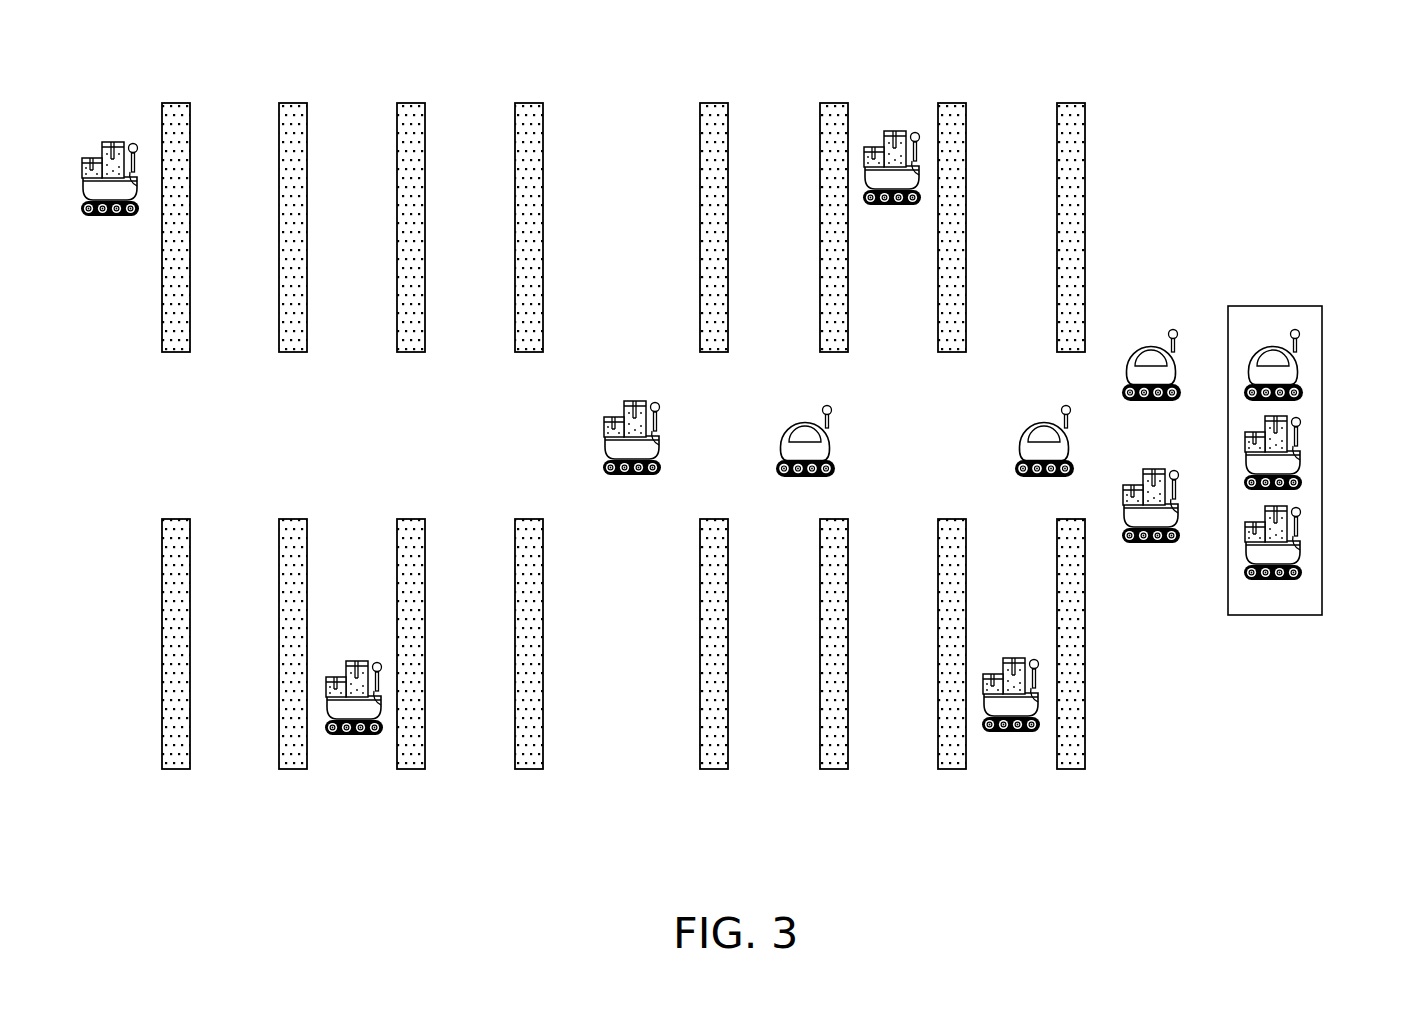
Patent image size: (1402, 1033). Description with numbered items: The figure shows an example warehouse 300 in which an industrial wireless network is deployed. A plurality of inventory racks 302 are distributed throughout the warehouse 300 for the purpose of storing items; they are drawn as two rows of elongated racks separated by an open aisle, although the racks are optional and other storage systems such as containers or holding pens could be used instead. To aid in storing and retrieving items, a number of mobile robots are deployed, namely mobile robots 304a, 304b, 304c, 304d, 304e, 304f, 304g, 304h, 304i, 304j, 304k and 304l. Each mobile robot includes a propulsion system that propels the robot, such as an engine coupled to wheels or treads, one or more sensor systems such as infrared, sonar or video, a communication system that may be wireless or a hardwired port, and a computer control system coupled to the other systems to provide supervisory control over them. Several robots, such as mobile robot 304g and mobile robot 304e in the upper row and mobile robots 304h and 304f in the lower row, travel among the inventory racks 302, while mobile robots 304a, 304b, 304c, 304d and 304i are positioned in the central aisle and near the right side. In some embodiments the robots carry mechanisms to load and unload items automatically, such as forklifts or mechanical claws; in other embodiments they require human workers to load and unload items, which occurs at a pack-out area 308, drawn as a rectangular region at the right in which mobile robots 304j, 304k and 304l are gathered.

The warehouse 300 is at (1272, 118).
The inventory racks 302 is at (158, 96).
The mobile robot 304a is at (630, 474).
The mobile robot 304b is at (805, 477).
The mobile robot 304c is at (1045, 477).
The mobile robot 304d is at (1151, 400).
The mobile robot 304e is at (870, 203).
The mobile robot 304f is at (990, 731).
The mobile robot 304g is at (93, 215).
The mobile robot 304h is at (335, 734).
The mobile robot 304i is at (1150, 541).
The mobile robot 304j is at (1299, 366).
The mobile robot 304k is at (1296, 456).
The mobile robot 304l is at (1292, 524).
The pack-out area 308 is at (1275, 306).